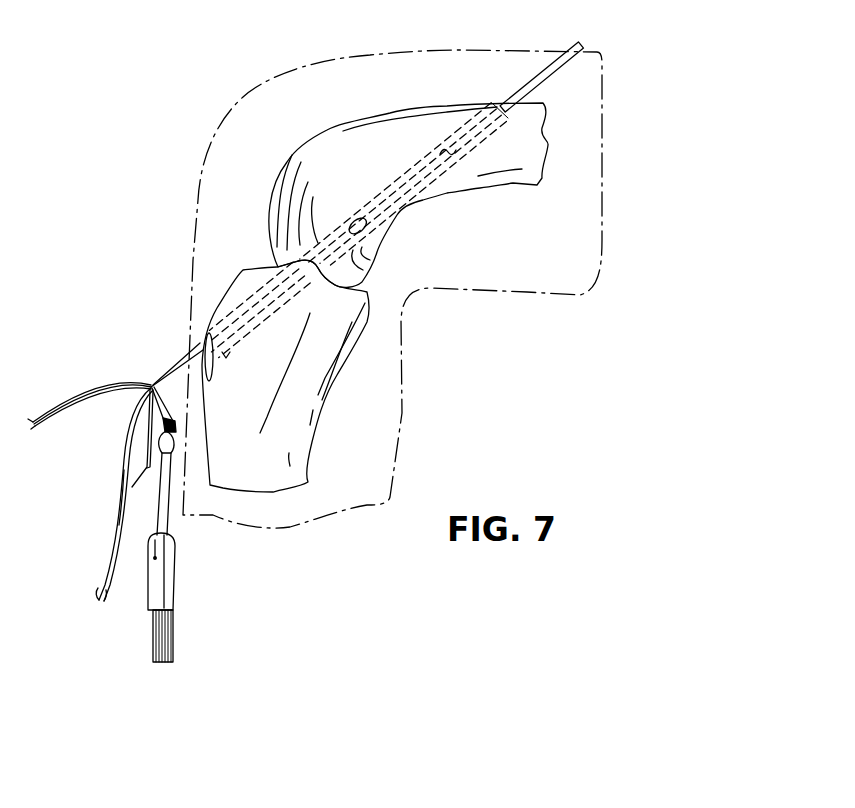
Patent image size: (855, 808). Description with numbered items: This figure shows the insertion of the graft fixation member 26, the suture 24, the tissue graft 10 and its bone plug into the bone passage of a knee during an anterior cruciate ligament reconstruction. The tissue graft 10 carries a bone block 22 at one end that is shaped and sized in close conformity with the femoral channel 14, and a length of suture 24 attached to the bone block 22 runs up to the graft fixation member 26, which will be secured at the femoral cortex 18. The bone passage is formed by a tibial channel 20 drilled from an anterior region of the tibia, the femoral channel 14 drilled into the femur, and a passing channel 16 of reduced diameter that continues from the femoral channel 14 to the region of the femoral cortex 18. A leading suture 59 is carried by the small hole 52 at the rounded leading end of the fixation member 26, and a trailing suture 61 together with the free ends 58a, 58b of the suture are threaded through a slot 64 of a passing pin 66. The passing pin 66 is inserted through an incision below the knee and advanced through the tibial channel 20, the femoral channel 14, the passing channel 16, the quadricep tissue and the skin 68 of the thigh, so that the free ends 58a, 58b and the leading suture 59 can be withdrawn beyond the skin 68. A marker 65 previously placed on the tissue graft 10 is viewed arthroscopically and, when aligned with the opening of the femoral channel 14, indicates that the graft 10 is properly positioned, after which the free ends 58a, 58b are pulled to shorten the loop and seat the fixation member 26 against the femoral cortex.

The tissue graft 10 is at (196, 600).
The femoral channel 14 is at (397, 187).
The passing channel 16 is at (477, 124).
The femoral cortex 18 is at (500, 102).
The tibial channel 20 is at (250, 282).
The bone block 22 is at (173, 562).
The suture 24 is at (168, 499).
The graft fixation member 26 is at (176, 444).
The hole 52 is at (179, 428).
The free end 58a is at (138, 446).
The free end 58b is at (121, 498).
The leading suture 59 is at (105, 560).
The trailing suture 61 is at (38, 428).
The slot 64 is at (128, 367).
The marker 65 is at (175, 648).
The passing pin 66 is at (171, 372).
The skin 68 is at (546, 55).